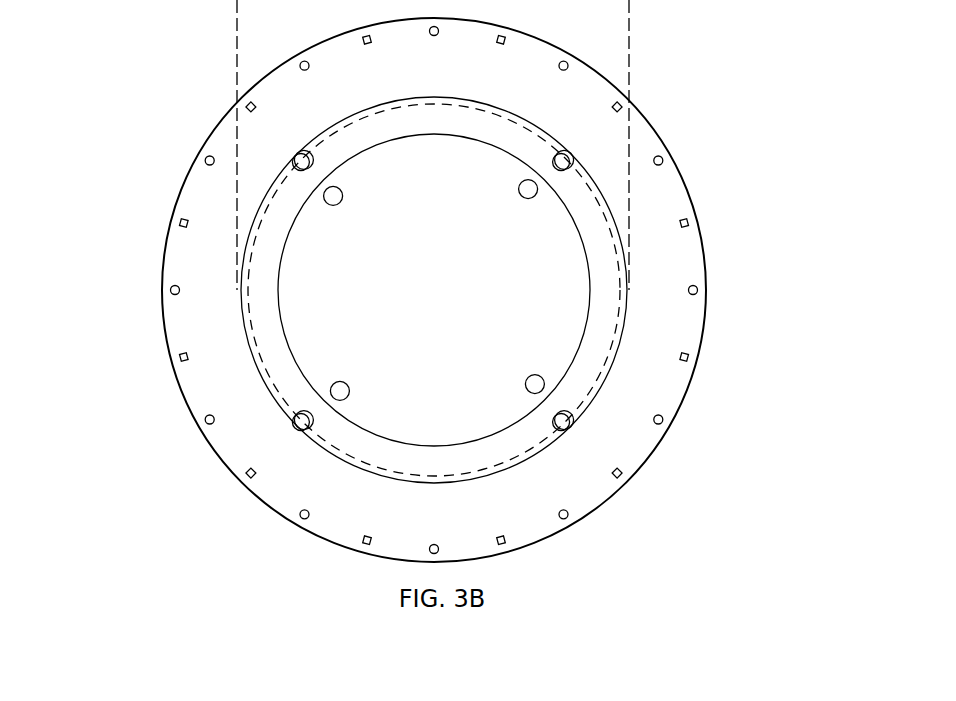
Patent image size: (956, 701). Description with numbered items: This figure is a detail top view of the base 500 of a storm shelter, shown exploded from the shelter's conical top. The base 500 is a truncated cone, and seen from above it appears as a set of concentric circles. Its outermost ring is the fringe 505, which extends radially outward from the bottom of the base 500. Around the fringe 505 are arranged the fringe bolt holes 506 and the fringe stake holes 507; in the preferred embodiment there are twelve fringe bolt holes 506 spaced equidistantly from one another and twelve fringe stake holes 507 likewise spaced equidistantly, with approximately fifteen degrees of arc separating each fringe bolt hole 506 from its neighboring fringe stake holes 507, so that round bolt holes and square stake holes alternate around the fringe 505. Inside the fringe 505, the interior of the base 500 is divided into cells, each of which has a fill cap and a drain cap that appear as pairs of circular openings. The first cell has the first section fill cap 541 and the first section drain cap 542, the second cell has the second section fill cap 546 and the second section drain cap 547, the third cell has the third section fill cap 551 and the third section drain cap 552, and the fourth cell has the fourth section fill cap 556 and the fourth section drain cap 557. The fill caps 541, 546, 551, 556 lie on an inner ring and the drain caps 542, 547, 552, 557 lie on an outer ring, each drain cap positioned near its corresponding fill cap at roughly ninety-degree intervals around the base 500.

The base 500 is at (700, 64).
The fringe 505 is at (673, 303).
The fringe bolt hole 506 is at (170, 290).
The fringe stake hole 507 is at (181, 219).
The first section fill cap 541 is at (331, 388).
The first section drain cap 542 is at (296, 425).
The second section fill cap 546 is at (324, 192).
The second section drain cap 547 is at (295, 153).
The third section fill cap 551 is at (537, 185).
The third section drain cap 552 is at (572, 154).
The fourth section fill cap 556 is at (544, 378).
The fourth section drain cap 557 is at (572, 426).